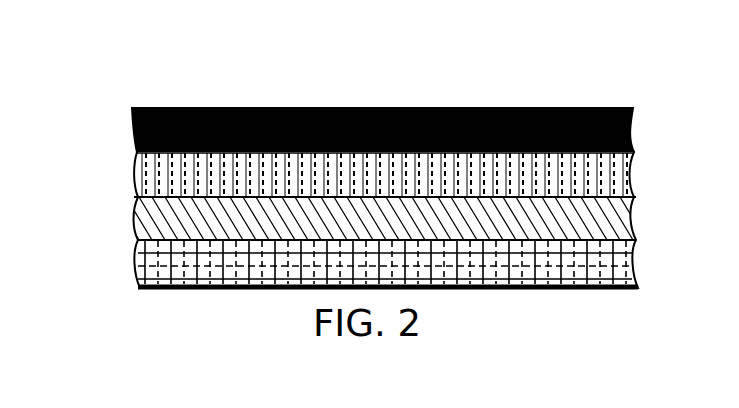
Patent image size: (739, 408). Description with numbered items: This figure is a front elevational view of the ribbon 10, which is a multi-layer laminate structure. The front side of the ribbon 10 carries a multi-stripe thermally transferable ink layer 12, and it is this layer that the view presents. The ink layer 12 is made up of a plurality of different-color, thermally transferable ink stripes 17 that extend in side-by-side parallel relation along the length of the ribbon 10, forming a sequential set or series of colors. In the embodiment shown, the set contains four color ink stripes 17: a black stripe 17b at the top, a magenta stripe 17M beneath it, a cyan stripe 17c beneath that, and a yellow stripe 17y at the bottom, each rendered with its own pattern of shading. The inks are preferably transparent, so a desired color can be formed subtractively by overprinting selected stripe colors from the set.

The ribbon 10 is at (423, 94).
The ink layer 12 is at (115, 198).
The color ink stripes 17 is at (648, 153).
The black ink stripe 17b is at (137, 138).
The magenta ink stripe 17M is at (148, 177).
The cyan ink stripe 17c is at (143, 215).
The yellow ink stripe 17y is at (148, 265).